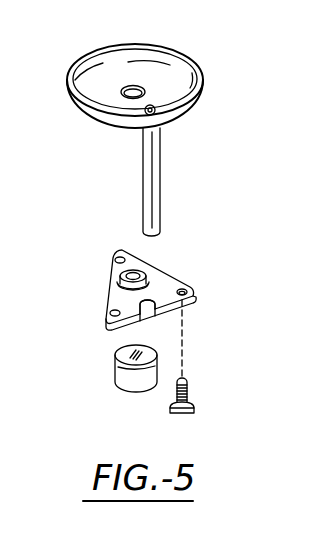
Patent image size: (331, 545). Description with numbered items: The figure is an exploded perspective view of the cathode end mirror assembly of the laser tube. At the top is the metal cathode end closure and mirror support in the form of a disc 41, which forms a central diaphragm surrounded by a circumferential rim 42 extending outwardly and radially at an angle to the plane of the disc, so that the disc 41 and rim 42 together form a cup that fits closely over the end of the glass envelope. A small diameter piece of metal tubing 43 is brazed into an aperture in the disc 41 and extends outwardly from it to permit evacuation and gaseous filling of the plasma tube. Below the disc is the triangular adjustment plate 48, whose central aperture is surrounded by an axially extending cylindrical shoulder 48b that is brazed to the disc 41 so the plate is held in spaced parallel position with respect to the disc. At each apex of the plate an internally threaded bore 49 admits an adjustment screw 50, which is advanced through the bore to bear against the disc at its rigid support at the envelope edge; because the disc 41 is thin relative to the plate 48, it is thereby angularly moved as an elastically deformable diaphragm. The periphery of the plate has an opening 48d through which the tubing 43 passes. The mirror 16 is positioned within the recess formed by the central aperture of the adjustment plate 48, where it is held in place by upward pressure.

The disc 41 is at (162, 82).
The circumferential rim 42 is at (86, 59).
The metal tubing 43 is at (162, 182).
The adjustment plate 48 is at (173, 277).
The cylindrical shoulder 48b is at (133, 270).
The opening 48d is at (155, 318).
The internally threaded bore 49 is at (193, 294).
The mirror 16 is at (115, 370).
The adjustment screw 50 is at (190, 405).